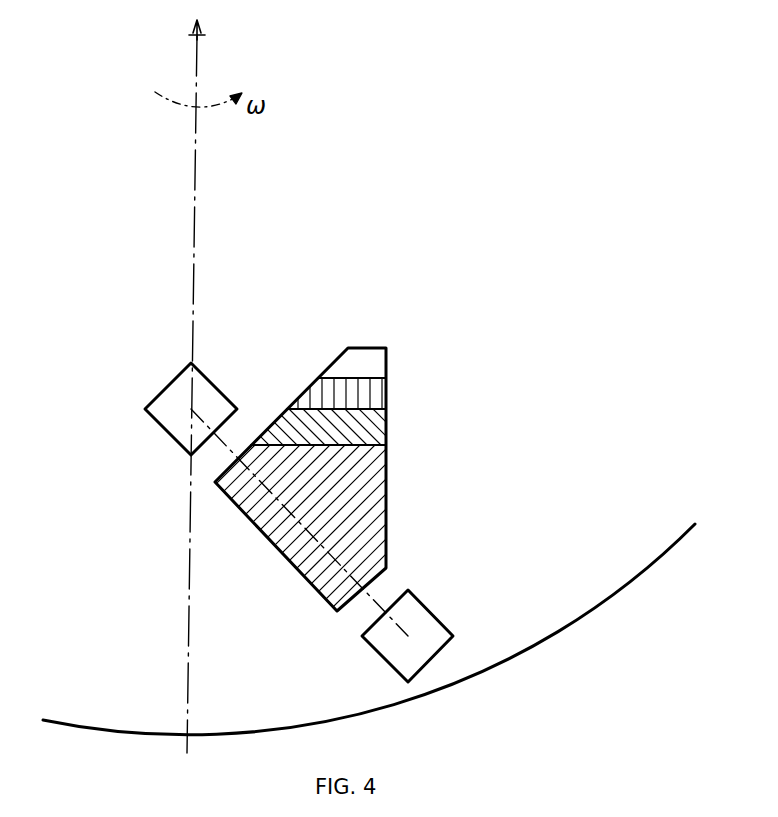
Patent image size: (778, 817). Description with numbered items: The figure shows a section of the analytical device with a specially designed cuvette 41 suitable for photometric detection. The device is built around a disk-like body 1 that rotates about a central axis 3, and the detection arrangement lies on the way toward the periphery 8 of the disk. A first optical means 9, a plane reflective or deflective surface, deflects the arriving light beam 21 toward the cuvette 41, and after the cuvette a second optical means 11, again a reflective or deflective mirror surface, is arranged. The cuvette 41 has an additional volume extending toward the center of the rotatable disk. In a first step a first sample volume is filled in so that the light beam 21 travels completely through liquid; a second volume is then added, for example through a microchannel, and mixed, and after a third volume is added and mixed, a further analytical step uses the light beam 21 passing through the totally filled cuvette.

The disk-like body 1 is at (635, 519).
The central axis 3 is at (201, 382).
The periphery 8 is at (588, 614).
The first optical means 9 is at (205, 392).
The second optical means 11 is at (422, 618).
The light beam 21 is at (373, 602).
The cuvette 41 is at (400, 502).